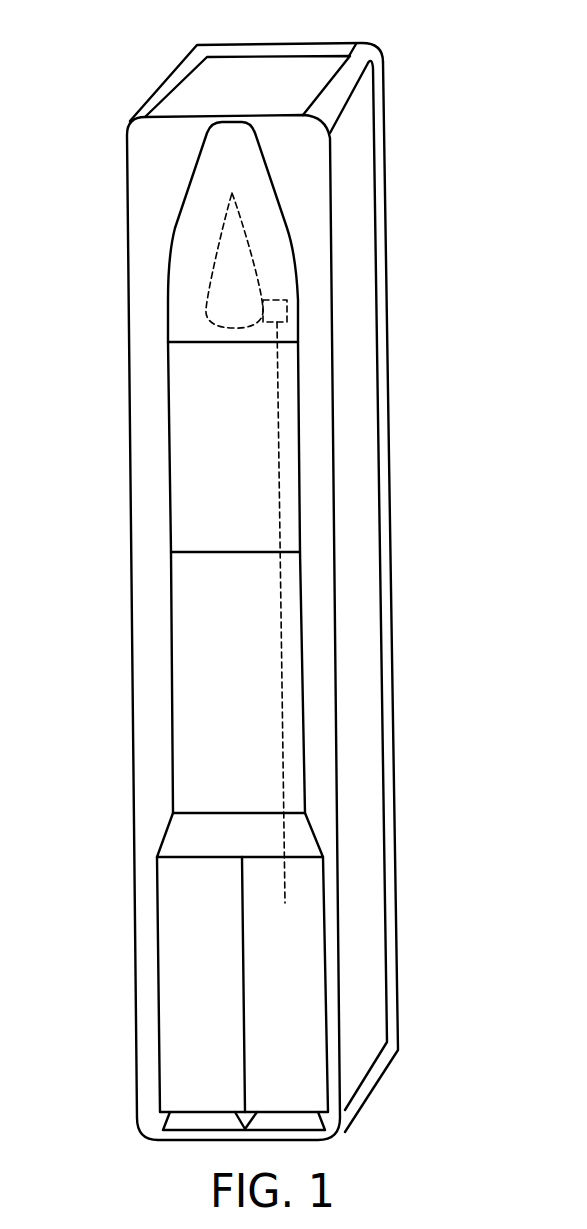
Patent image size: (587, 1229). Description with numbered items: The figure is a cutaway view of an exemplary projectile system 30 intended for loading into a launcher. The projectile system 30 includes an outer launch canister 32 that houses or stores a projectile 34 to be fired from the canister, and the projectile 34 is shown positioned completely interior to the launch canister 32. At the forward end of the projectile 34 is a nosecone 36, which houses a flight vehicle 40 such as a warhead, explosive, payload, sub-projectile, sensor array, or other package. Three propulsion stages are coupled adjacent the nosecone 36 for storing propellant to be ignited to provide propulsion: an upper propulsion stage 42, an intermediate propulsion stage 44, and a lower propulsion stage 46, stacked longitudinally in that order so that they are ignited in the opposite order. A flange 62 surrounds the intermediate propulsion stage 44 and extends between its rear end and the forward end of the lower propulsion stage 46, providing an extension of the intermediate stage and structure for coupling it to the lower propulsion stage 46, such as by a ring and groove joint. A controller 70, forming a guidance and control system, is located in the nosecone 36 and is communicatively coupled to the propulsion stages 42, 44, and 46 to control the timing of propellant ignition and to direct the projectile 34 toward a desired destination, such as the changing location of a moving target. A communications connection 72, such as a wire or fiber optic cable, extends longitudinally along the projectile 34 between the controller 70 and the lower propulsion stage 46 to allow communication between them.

The projectile system 30 is at (434, 57).
The outer launch canister 32 is at (359, 692).
The projectile 34 is at (247, 467).
The nosecone 36 is at (173, 232).
The flight vehicle 40 is at (243, 272).
The upper propulsion stage 42 is at (303, 445).
The intermediate propulsion stage 44 is at (293, 627).
The lower propulsion stage 46 is at (180, 915).
The flange 62 is at (187, 838).
The controller 70 is at (283, 313).
The communications connection 72 is at (287, 888).